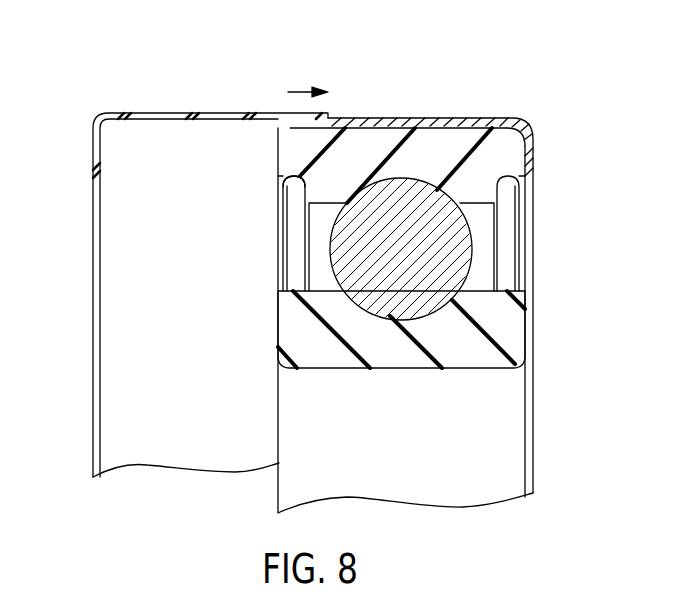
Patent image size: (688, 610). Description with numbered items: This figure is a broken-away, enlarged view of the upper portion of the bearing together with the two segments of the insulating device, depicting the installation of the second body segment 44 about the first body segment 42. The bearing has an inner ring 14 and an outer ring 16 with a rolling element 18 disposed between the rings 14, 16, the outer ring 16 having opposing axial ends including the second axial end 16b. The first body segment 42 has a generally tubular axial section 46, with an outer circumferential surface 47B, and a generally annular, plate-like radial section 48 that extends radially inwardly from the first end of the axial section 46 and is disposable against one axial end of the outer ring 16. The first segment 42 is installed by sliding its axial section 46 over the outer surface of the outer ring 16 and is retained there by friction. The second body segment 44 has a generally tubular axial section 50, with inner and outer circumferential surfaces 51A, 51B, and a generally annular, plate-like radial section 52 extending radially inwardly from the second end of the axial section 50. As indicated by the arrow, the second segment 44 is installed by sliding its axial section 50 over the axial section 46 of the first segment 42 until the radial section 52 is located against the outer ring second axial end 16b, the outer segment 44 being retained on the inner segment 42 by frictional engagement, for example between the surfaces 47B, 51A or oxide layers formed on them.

The first body segment 42 is at (545, 80).
The second body segment 44 is at (200, 84).
The first segment axial section 46 is at (402, 125).
The outer circumferential surface 47B is at (468, 125).
The first segment radial section 48 is at (531, 148).
The second segment axial section 50 is at (248, 113).
The inner circumferential surface 51A is at (173, 122).
The outer circumferential surface 51B is at (133, 113).
The second segment radial section 52 is at (96, 155).
The inner ring 14 is at (262, 341).
The outer ring 16 is at (262, 212).
The second axial end 16b is at (277, 178).
The rolling elements 18 is at (353, 277).